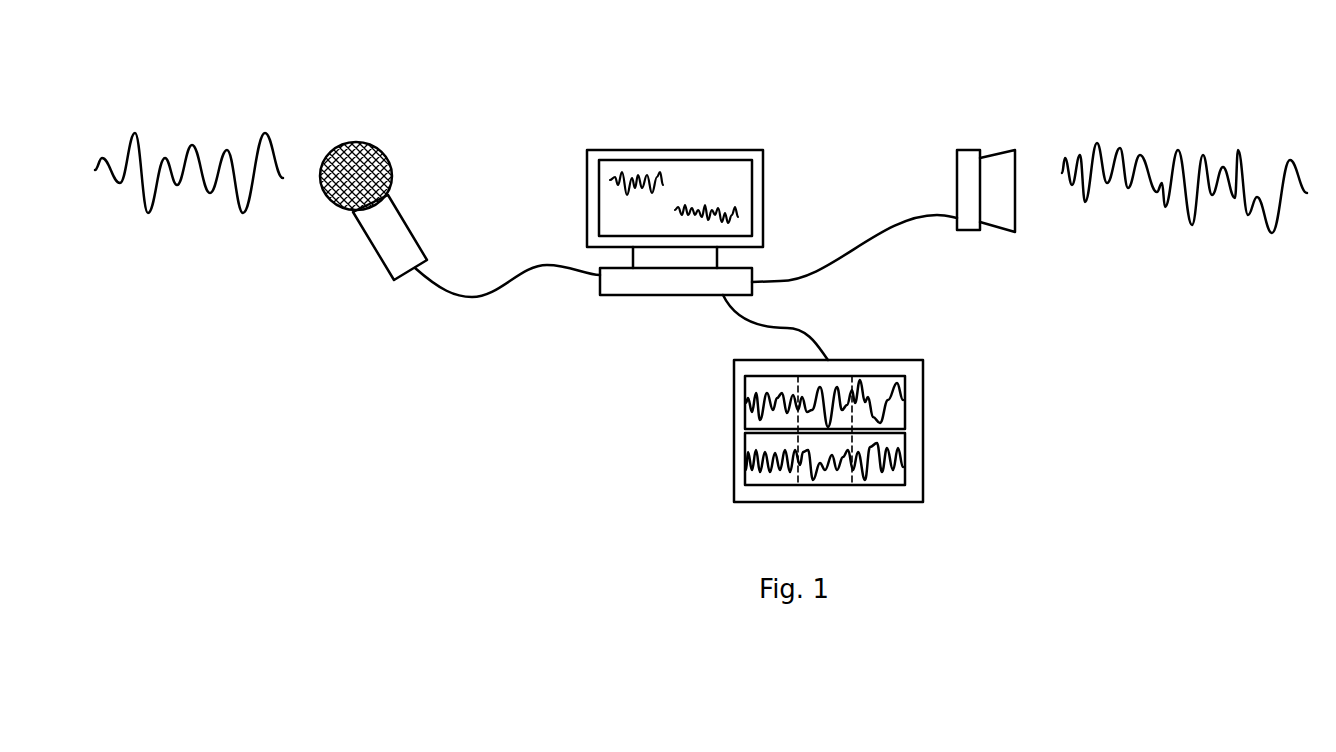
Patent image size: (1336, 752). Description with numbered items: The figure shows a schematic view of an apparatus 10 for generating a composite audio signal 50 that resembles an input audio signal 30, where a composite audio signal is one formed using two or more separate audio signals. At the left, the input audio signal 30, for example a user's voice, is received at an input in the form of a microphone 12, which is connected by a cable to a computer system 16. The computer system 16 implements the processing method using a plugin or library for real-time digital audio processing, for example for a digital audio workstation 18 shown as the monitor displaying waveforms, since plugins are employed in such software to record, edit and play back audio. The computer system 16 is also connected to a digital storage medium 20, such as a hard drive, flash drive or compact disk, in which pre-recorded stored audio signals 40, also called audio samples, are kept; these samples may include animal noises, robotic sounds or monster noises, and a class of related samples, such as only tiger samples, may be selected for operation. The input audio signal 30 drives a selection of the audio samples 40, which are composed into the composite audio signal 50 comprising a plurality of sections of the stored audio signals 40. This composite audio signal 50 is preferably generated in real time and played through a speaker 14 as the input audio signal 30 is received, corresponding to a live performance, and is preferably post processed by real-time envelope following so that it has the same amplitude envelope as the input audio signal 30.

The apparatus 10 is at (428, 452).
The microphone 12 is at (382, 262).
The speaker 14 is at (973, 230).
The computer system 16 is at (675, 297).
The digital audio workstation (DAW) 18 is at (717, 177).
The digital storage medium 20 is at (923, 425).
The input audio signal 30 is at (135, 133).
The stored audio signals 40 is at (750, 462).
The composite audio signal 50 is at (1178, 150).